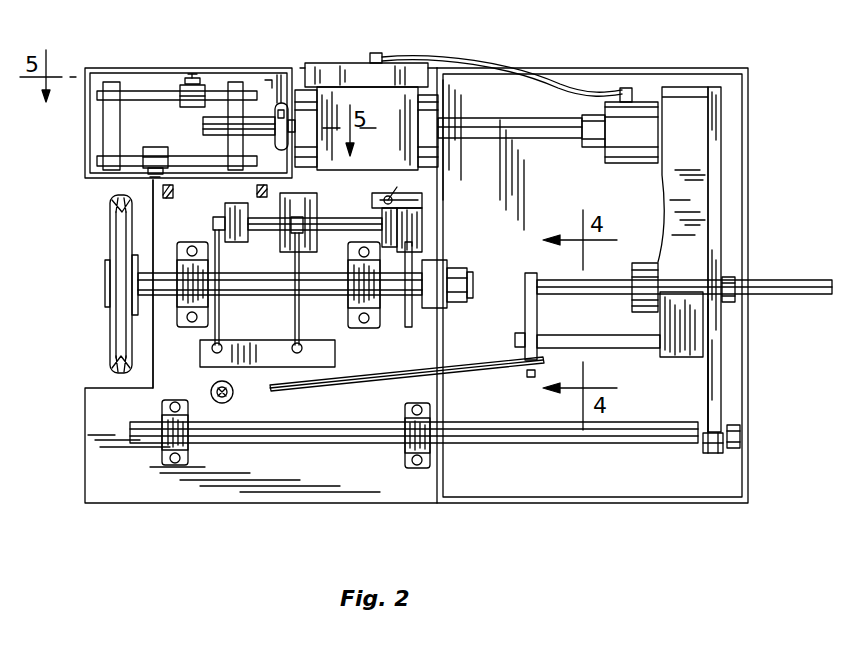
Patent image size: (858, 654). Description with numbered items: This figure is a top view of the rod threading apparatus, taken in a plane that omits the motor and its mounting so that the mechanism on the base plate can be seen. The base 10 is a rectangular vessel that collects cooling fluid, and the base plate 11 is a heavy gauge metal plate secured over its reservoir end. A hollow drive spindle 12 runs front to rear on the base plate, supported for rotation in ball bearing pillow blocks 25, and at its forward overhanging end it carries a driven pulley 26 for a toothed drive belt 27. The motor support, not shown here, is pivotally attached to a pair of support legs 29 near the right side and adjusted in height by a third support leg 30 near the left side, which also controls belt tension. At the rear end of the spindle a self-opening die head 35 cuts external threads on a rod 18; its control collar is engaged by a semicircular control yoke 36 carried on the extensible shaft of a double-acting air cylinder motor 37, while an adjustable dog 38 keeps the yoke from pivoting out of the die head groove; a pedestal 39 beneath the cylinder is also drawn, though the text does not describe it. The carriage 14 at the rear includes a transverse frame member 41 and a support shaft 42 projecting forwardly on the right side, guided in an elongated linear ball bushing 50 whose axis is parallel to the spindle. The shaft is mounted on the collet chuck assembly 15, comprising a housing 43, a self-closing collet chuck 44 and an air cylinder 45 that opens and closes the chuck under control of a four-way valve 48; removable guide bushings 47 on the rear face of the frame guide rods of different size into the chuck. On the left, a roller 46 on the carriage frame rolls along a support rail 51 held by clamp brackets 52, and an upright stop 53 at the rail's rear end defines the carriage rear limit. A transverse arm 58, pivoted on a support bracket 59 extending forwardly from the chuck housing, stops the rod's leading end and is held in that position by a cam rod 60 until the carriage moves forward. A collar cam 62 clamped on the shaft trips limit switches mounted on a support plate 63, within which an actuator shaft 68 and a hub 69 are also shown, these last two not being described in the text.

The base 10 is at (669, 517).
The base plate 11 is at (110, 492).
The drive spindle 12 is at (280, 296).
The carriage 14 is at (737, 152).
The collet chuck assembly 15 is at (694, 153).
The rod 18 is at (798, 293).
The ball bearing pillow blocks 25 is at (185, 328).
The driven pulley 26 is at (118, 322).
The toothed drive belt 27 is at (115, 365).
The support legs 29 is at (163, 191).
The third support leg 30 is at (211, 392).
The self-opening die head 35 is at (460, 263).
The control yoke 36 is at (412, 318).
The air cylinder motor 37 is at (270, 230).
The adjustable dog 38 is at (420, 197).
The pedestal 39 is at (267, 370).
The transverse frame member 41 is at (708, 392).
The support shaft 42 is at (508, 122).
The housing 43 is at (667, 170).
The self-closing collet chuck 44 is at (642, 266).
The air cylinder 45 is at (615, 133).
The roller 46 is at (708, 440).
The guide bushings 47 is at (732, 277).
The four-way valve 48 is at (347, 67).
The linear ball bushing 50 is at (408, 159).
The support rail 51 is at (542, 438).
The clamp brackets 52 is at (175, 468).
The upright stop 53 is at (742, 427).
The transverse arm 58 is at (533, 324).
The support bracket 59 is at (617, 345).
The cam rod 60 is at (480, 373).
The collar cam 62 is at (275, 150).
The support plate 63 is at (162, 136).
The upper shaft 68 is at (146, 84).
The hub 69 is at (124, 146).